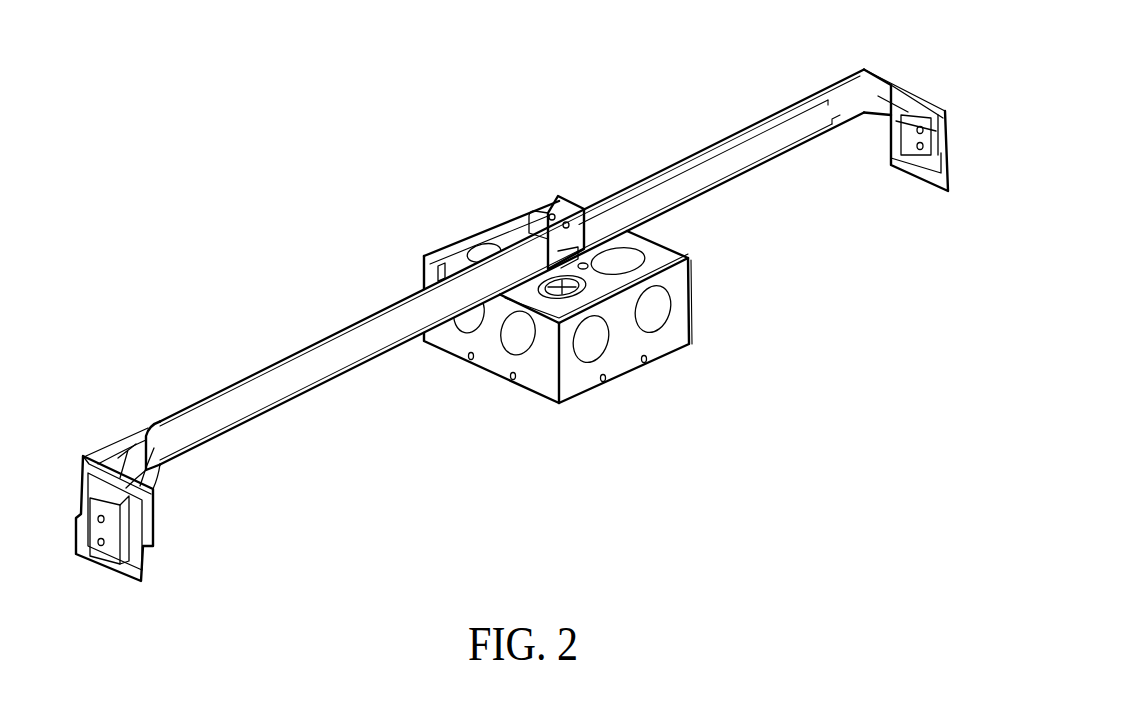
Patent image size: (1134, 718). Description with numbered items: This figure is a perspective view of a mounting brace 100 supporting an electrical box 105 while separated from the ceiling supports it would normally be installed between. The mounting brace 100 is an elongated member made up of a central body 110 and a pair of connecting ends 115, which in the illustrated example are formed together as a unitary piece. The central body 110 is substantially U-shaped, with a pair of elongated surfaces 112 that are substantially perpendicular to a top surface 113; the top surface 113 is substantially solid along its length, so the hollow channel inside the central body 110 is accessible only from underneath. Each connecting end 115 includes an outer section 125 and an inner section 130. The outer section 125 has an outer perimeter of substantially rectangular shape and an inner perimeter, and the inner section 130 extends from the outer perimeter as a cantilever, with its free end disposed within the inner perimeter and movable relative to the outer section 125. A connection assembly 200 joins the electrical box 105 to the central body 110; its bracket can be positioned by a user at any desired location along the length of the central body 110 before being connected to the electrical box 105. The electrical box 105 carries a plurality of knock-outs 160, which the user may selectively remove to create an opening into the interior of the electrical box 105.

The mounting brace 100 is at (353, 117).
The electrical box 105 is at (636, 337).
The central body 110 is at (255, 314).
The elongated surfaces 112 is at (735, 151).
The top surface 113 is at (726, 127).
The connecting ends 115 is at (98, 436).
The outer section 125 is at (133, 508).
The inner section 130 is at (103, 541).
The knock-outs 160 is at (623, 253).
The connection assembly 200 is at (523, 183).